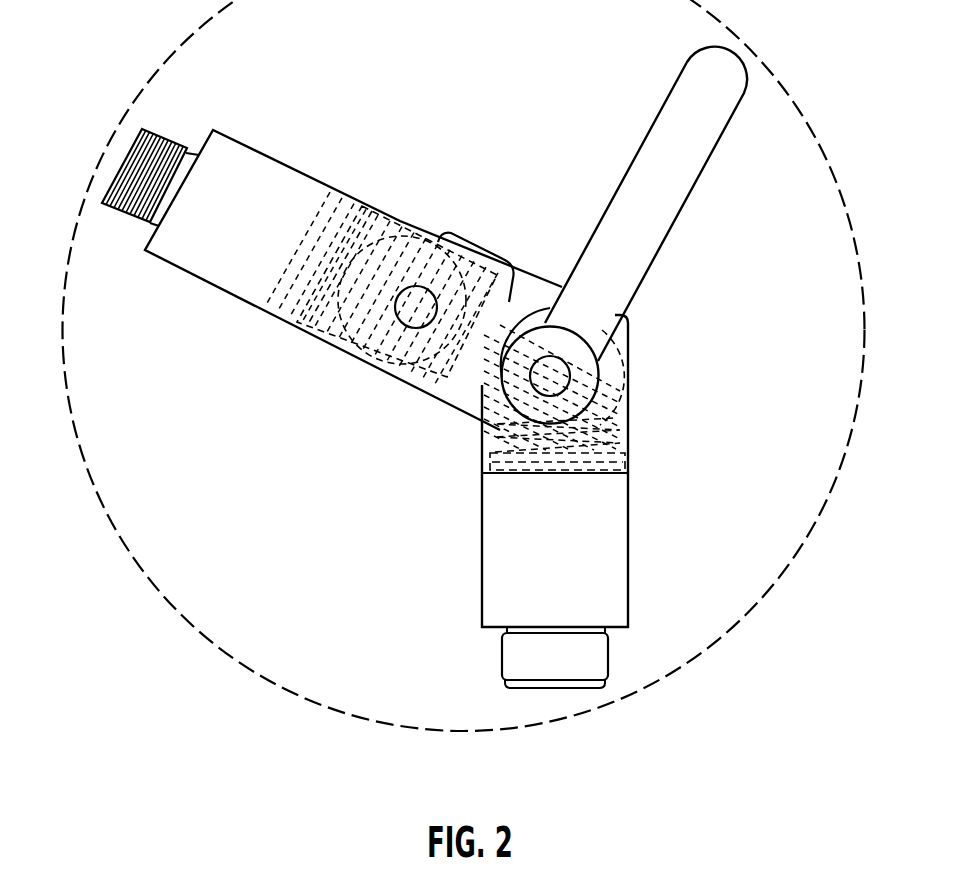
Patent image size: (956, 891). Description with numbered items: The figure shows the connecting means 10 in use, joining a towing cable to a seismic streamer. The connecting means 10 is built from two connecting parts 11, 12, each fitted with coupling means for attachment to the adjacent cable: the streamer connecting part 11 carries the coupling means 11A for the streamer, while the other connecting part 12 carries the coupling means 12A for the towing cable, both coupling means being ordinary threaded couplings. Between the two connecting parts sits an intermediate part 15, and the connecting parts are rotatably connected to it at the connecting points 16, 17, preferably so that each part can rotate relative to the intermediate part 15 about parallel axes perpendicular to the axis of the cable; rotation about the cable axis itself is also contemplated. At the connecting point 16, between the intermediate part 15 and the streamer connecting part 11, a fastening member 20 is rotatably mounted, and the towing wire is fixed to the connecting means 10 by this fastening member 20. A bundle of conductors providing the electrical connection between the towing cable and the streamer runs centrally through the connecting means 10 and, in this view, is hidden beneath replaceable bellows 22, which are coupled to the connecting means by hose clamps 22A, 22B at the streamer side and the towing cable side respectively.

The connecting means 10 is at (334, 487).
The connecting part 11 is at (630, 512).
The coupling means 11A is at (610, 670).
The connecting part 12 is at (200, 282).
The coupling means 12A is at (131, 150).
The intermediate part 15 is at (470, 236).
The connecting point 16 is at (602, 388).
The connecting point 17 is at (362, 356).
The fastening member 20 is at (703, 167).
The bellows 22 is at (520, 300).
The hose clamp 22A is at (567, 472).
The hose clamp 22B is at (340, 235).